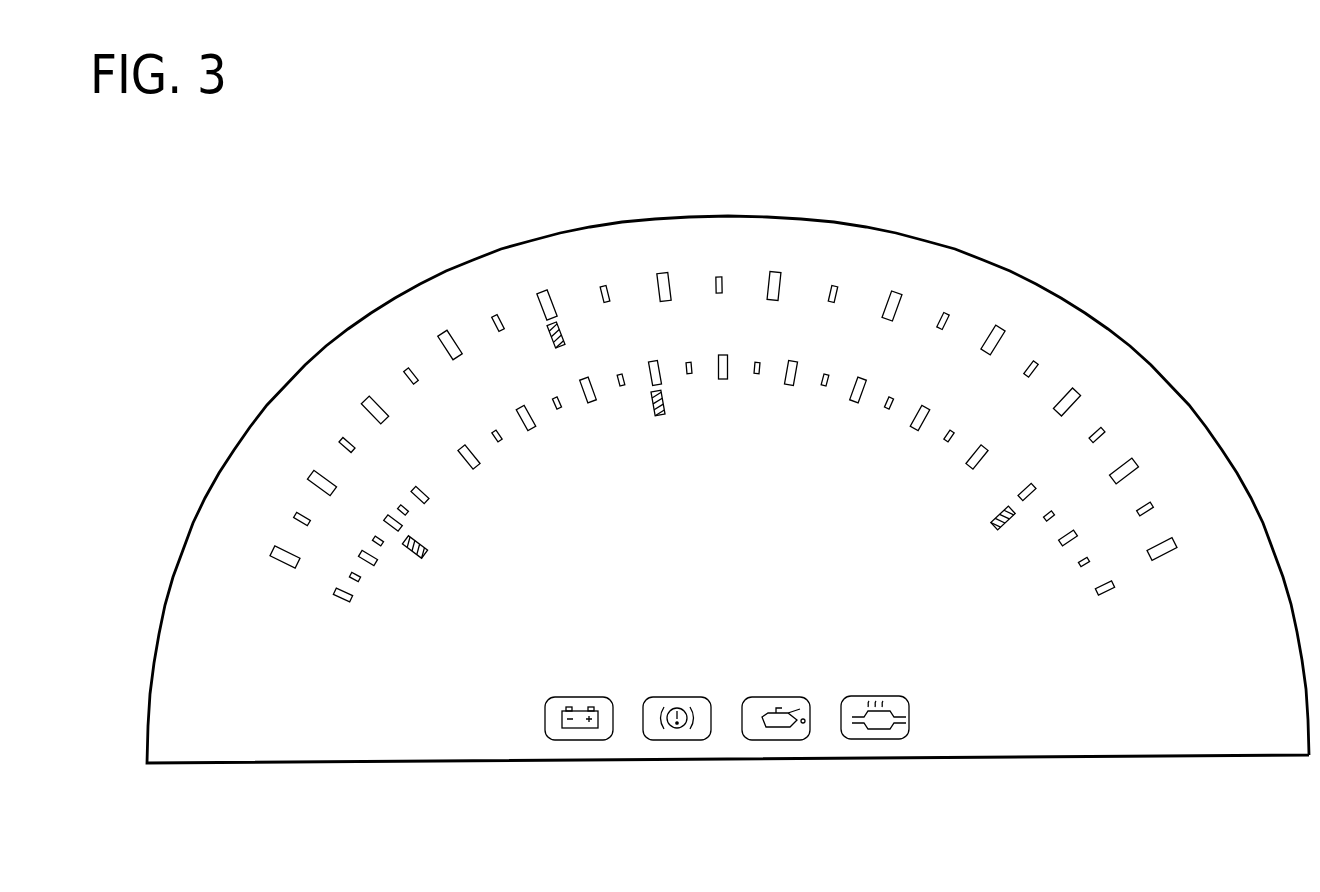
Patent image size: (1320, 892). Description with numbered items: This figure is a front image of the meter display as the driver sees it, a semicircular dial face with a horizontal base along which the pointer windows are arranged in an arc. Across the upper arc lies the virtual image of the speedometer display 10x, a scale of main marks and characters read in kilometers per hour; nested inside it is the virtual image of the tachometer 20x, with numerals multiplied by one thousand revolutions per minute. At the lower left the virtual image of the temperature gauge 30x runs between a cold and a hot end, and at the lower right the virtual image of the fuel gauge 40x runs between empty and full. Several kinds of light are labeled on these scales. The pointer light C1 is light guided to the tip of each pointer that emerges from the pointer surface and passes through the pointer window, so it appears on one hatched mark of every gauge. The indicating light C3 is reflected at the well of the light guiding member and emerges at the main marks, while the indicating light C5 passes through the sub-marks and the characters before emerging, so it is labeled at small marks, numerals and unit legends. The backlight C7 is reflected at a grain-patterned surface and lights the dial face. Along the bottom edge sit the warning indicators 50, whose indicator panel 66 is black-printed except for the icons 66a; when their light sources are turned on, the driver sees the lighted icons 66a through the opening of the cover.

The warning indicators 50 is at (932, 730).
The indicator panel 66 is at (727, 768).
The icons 66a is at (580, 740).
The virtual image of the speedometer display 10x is at (742, 362).
The virtual image of the tachometer 20x is at (968, 398).
The virtual image of the temperature gauge 30x is at (385, 498).
The virtual image of the fuel gauge 40x is at (1063, 505).
The pointer light C1 is at (548, 333).
The indicating light from main marks C3 is at (655, 287).
The indicating light from sub-marks and characters C5 is at (718, 283).
The backlight C7 is at (852, 250).